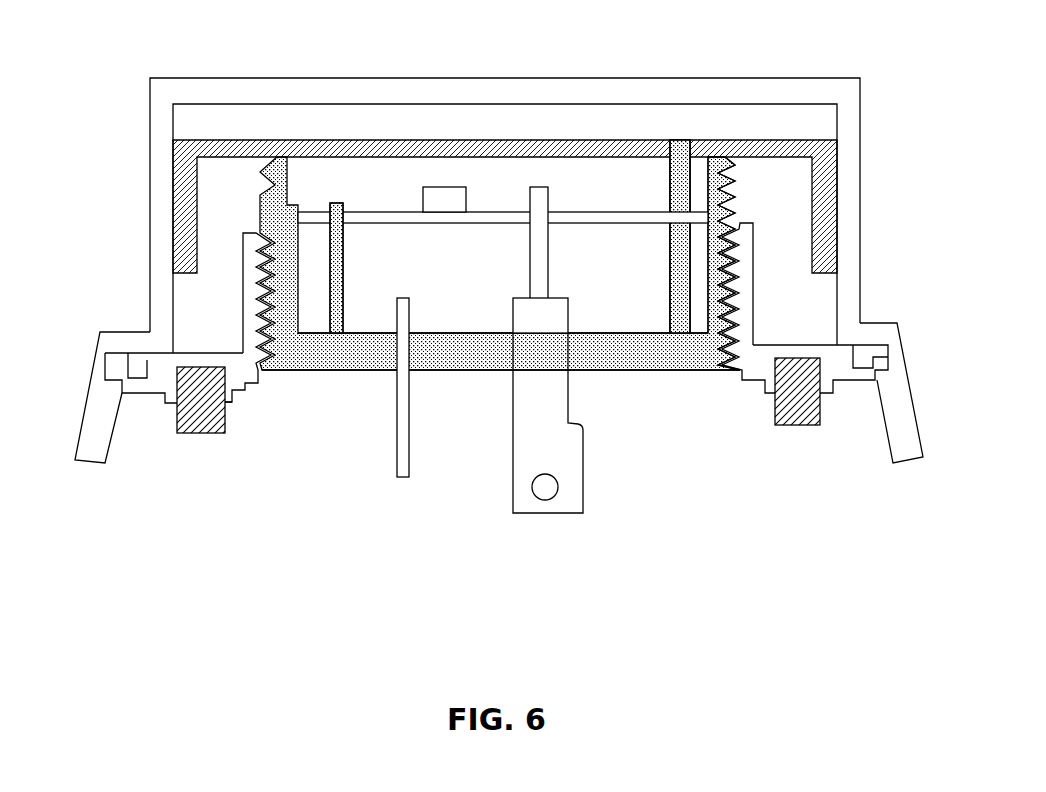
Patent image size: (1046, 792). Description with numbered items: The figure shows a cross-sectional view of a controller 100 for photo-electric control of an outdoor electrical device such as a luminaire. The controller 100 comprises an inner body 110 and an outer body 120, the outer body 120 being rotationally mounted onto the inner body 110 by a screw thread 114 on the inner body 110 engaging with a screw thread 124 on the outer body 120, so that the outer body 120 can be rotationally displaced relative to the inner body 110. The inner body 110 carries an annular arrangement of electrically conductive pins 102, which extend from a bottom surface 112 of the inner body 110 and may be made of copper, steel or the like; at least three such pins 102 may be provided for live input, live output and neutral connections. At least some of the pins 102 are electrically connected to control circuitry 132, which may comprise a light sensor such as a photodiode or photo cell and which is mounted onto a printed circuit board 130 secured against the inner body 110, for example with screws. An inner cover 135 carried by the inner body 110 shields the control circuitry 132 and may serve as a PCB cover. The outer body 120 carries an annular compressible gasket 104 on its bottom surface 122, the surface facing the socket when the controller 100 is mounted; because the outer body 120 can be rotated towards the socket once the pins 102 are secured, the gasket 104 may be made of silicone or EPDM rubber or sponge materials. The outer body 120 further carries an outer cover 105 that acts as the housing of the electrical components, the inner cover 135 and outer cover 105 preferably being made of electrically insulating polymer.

The controller 100 is at (516, 652).
The electrically conductive pins 102 is at (403, 479).
The annular compressible gasket 104 is at (197, 436).
The outer cover 105 is at (667, 93).
The inner body 110 is at (535, 336).
The bottom surface 112 is at (465, 372).
The screw thread 114 is at (700, 280).
The outer body 120 is at (244, 387).
The bottom surface 122 is at (855, 386).
The screw thread 124 is at (741, 251).
The printed circuit board 130 is at (485, 221).
The control circuitry 132 is at (441, 206).
The inner cover 135 is at (498, 140).